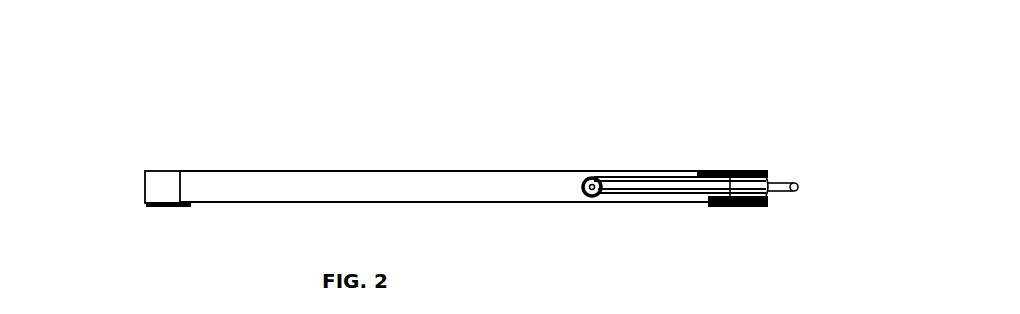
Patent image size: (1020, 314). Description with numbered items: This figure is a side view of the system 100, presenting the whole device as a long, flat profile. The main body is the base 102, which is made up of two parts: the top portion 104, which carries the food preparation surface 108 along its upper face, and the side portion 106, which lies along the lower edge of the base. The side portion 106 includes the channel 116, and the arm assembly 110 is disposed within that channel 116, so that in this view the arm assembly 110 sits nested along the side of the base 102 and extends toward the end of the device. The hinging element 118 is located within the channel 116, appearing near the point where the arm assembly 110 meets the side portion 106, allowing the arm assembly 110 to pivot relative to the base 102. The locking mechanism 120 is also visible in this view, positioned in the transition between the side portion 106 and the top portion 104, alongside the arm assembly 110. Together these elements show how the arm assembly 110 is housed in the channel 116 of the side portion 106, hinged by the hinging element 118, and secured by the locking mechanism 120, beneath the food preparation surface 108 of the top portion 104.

The system 100 is at (168, 92).
The base 102 is at (121, 184).
The top portion 104 is at (165, 170).
The side portion 106 is at (560, 190).
The food preparation surface 108 is at (333, 170).
The arm assembly 110 is at (816, 189).
The channel 116 is at (609, 211).
The hinging element 118 is at (588, 174).
The locking mechanism 120 is at (715, 170).